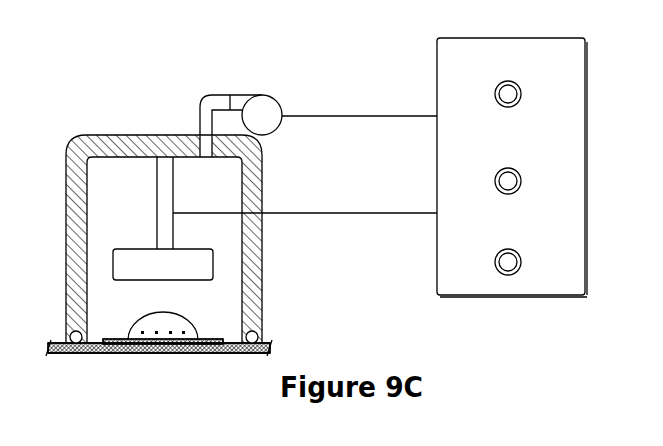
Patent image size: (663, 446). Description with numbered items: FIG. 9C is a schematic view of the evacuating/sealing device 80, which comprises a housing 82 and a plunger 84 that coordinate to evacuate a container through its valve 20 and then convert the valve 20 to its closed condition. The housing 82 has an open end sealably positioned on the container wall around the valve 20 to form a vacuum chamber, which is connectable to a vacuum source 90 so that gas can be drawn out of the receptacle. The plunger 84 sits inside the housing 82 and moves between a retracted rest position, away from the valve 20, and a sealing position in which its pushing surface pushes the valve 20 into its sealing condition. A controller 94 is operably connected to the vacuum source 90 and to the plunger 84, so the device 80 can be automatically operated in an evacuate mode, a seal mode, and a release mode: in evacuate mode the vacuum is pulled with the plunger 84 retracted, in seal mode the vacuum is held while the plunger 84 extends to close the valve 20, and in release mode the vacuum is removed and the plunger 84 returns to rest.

The valve 20 is at (178, 315).
The evacuating/sealing device 80 is at (241, 212).
The housing 82 is at (262, 193).
The plunger 84 is at (157, 231).
The vacuum source 90 is at (258, 110).
The controller 94 is at (590, 178).